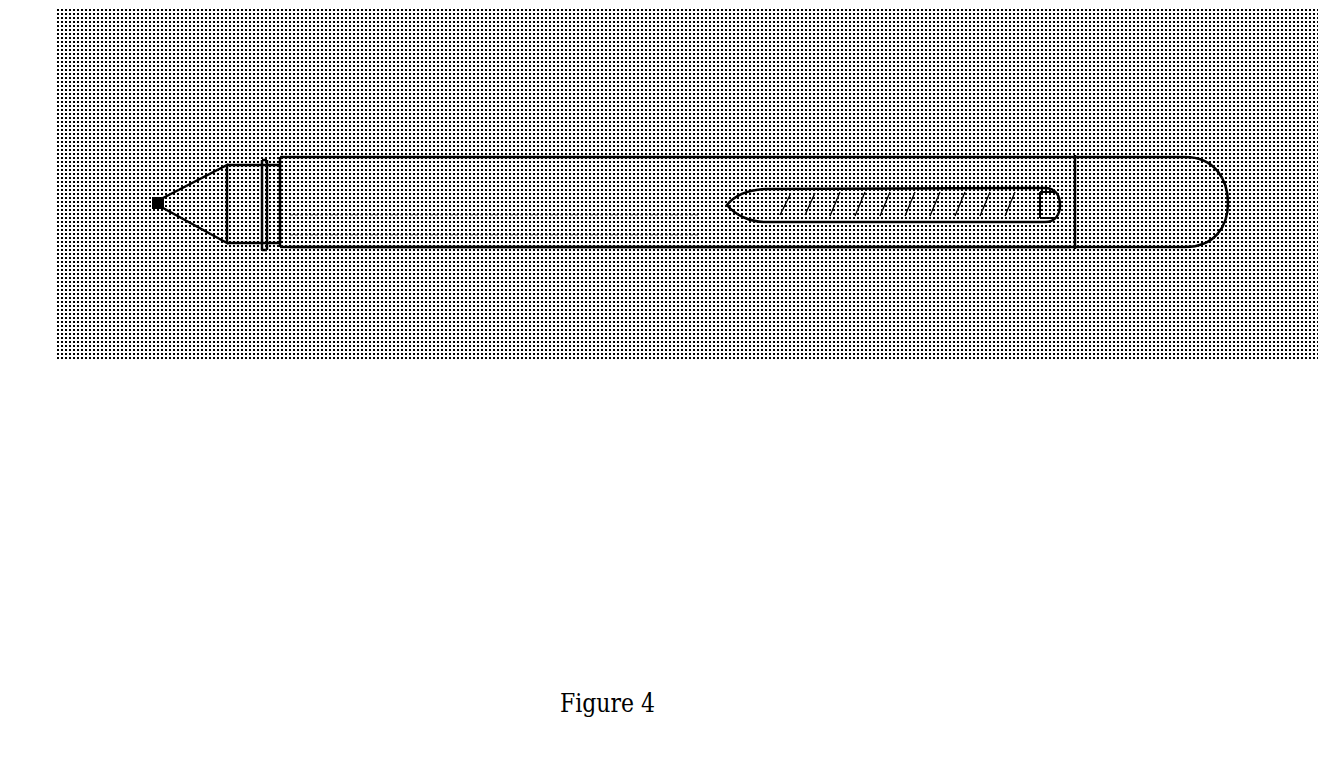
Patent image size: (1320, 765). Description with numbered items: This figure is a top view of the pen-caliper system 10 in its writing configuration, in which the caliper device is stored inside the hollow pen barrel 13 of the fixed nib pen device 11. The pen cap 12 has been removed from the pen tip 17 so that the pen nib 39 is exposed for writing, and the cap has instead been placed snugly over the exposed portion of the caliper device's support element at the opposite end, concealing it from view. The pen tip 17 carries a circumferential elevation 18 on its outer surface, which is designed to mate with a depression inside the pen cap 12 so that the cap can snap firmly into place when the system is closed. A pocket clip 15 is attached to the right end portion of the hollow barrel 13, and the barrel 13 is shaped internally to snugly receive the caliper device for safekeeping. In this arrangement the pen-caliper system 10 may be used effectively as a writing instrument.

The pen-caliper system 10 is at (645, 157).
The fixed nib pen device 11 is at (700, 249).
The pen cap 12 is at (1147, 203).
The pen barrel 13 is at (649, 200).
The pocket clip 15 is at (936, 205).
The pen tip 17 is at (203, 202).
The circumferential elevation 18 is at (263, 243).
The pen nib 39 is at (155, 203).